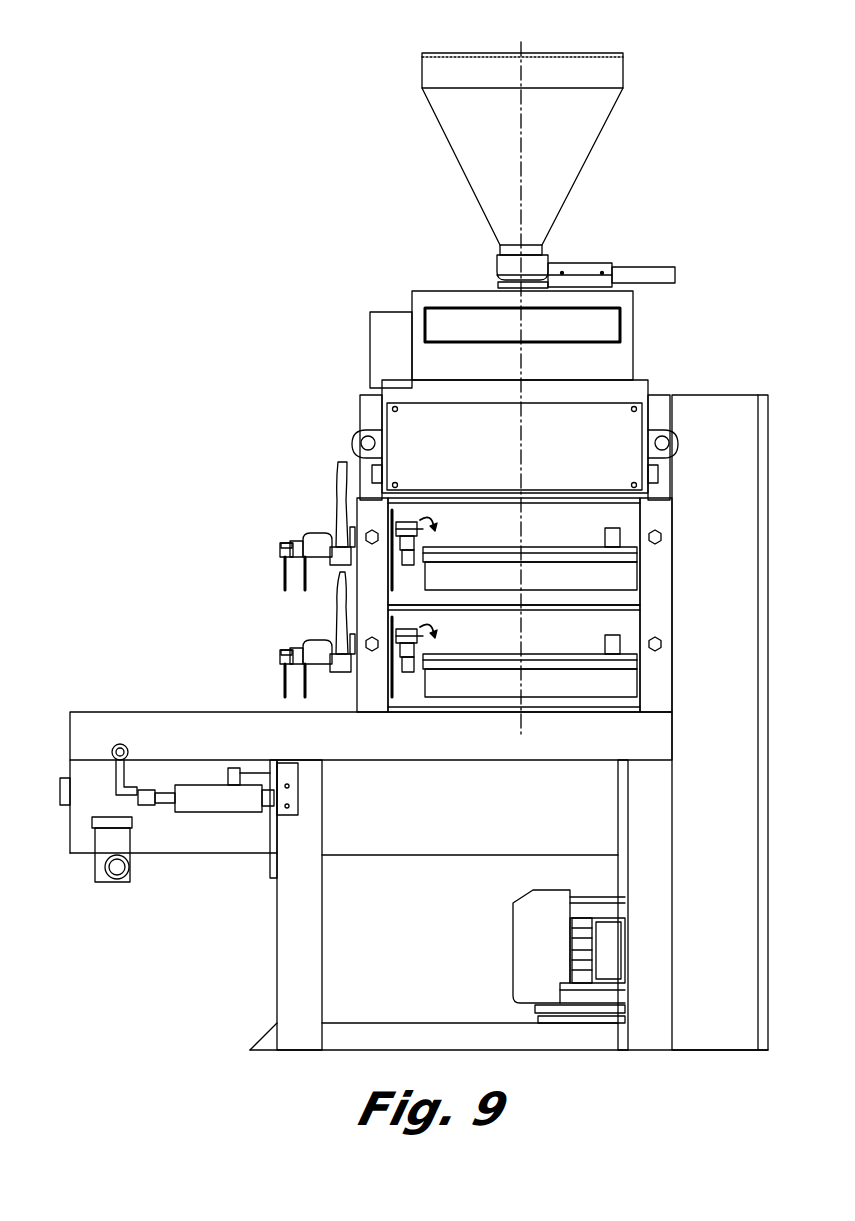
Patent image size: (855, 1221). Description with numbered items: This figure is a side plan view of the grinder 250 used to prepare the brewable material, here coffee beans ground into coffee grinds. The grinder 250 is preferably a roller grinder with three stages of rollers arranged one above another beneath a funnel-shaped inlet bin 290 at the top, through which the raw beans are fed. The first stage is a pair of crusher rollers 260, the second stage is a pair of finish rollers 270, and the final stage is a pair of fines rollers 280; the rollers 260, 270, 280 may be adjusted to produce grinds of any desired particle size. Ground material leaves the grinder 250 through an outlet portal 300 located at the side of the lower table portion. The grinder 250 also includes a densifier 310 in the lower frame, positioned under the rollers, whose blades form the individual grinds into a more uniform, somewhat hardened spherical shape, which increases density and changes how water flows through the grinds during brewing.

The grinder 250 is at (406, 40).
The inlet bin 290 is at (613, 108).
The crusher rollers 260 is at (617, 355).
The finish rollers 270 is at (648, 494).
The fines rollers 280 is at (640, 602).
The outlet portal 300 is at (62, 790).
The densifier 310 is at (630, 775).